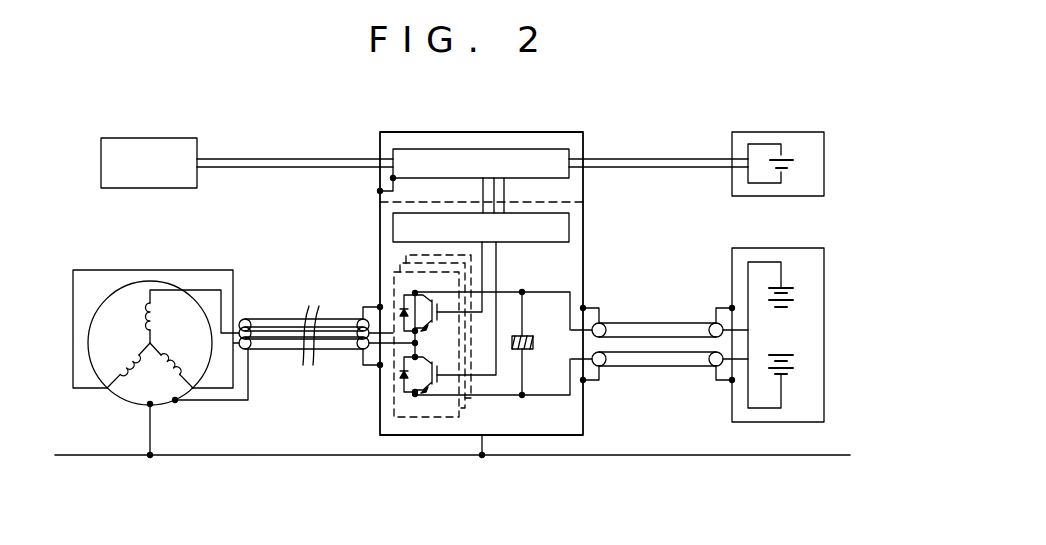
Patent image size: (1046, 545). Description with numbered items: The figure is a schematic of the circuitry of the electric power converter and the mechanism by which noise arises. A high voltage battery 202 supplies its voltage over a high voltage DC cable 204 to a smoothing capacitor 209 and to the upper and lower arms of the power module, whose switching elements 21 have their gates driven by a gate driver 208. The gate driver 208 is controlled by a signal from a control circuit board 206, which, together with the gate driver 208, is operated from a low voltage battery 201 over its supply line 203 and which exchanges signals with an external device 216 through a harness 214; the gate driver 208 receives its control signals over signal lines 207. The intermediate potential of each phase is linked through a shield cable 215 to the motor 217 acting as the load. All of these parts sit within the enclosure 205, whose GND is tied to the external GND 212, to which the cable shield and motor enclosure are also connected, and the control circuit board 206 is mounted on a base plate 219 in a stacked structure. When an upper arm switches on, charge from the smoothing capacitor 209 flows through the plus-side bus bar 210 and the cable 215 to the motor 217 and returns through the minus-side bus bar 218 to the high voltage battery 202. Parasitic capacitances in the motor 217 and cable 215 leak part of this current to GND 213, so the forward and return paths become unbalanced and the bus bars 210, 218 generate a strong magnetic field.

The switching element module 21 is at (394, 281).
The low voltage battery 201 is at (777, 132).
The high voltage battery 202 is at (778, 248).
The power supply line 203 is at (652, 158).
The high voltage DC cable 204 is at (655, 321).
The enclosure 205 is at (412, 132).
The control circuit board 206 is at (467, 149).
The signal lines 207 is at (505, 192).
The gate driver 208 is at (570, 230).
The smoothing capacitor 209 is at (530, 340).
The bus bar 210 is at (522, 292).
The GND 212 is at (482, 458).
The GND 213 is at (600, 458).
The harness 214 is at (278, 158).
The shield cable 215 is at (268, 319).
The external device 216 is at (147, 138).
The motor 217 is at (126, 406).
The bus bar 218 is at (494, 397).
The base plate 219 is at (562, 202).